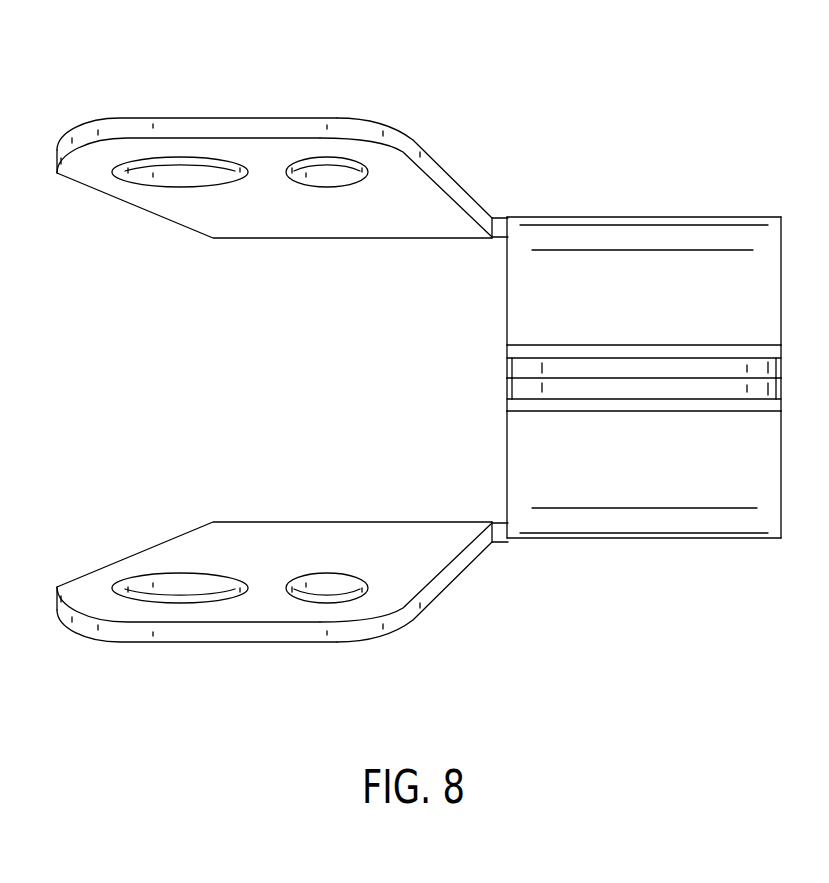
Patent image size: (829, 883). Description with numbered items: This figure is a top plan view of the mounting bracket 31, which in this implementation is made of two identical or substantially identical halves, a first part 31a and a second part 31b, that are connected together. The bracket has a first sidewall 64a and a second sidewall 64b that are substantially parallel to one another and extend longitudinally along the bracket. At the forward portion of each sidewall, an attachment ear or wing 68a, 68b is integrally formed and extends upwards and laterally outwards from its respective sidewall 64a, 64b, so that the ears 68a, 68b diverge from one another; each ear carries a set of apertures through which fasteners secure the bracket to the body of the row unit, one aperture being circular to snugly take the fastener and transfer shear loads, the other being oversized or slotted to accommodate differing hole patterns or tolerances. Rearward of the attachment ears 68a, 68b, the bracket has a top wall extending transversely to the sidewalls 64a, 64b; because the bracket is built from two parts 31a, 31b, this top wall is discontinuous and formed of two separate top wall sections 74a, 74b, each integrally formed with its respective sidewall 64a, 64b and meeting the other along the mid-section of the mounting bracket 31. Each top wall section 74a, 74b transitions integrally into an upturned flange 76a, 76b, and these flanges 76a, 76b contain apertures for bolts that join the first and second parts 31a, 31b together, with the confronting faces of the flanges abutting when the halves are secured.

The mounting bracket 31 is at (705, 93).
The first part 31a is at (457, 578).
The second part 31b is at (458, 178).
The first sidewall 64a is at (645, 540).
The second sidewall 64b is at (645, 217).
The attachment ear 68a is at (255, 633).
The attachment ear 68b is at (255, 125).
The top wall section 74a is at (523, 458).
The top wall section 74b is at (522, 302).
The flange 76a is at (525, 385).
The flange 76b is at (525, 373).